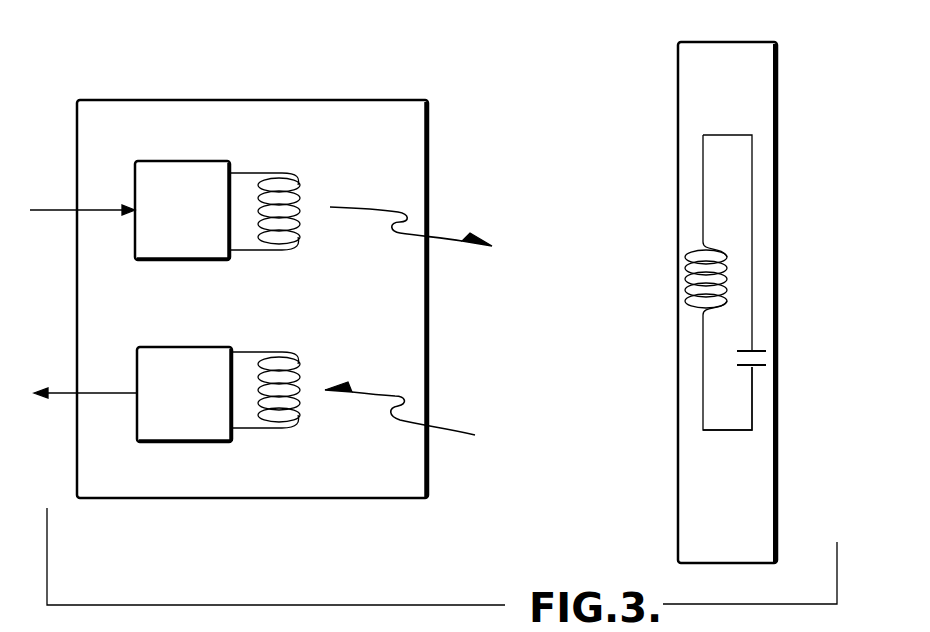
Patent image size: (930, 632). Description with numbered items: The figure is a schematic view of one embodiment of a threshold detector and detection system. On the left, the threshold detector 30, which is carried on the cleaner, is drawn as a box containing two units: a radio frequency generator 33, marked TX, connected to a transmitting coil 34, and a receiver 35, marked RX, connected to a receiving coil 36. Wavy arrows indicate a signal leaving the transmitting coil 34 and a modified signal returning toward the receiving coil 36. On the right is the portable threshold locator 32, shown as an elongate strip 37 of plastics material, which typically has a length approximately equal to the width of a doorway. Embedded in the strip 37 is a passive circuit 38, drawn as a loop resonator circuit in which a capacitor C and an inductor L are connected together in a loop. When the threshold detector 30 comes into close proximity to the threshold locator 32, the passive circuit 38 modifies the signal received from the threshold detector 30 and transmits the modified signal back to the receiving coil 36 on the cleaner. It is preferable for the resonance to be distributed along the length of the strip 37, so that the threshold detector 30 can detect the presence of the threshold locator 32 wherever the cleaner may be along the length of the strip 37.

The threshold detector 30 is at (283, 80).
The portable threshold locator 32 is at (790, 84).
The radio frequency generator 33 is at (165, 262).
The transmitting coil 34 is at (293, 176).
The receiver 35 is at (165, 445).
The receiving coil 36 is at (288, 355).
The elongate strip 37 is at (780, 430).
The passive circuit 38 is at (752, 217).
The inductor L is at (688, 278).
The capacitor C is at (775, 352).